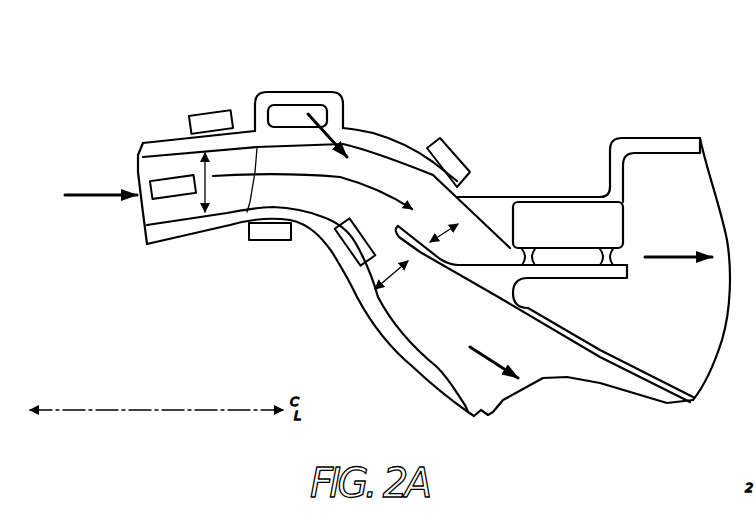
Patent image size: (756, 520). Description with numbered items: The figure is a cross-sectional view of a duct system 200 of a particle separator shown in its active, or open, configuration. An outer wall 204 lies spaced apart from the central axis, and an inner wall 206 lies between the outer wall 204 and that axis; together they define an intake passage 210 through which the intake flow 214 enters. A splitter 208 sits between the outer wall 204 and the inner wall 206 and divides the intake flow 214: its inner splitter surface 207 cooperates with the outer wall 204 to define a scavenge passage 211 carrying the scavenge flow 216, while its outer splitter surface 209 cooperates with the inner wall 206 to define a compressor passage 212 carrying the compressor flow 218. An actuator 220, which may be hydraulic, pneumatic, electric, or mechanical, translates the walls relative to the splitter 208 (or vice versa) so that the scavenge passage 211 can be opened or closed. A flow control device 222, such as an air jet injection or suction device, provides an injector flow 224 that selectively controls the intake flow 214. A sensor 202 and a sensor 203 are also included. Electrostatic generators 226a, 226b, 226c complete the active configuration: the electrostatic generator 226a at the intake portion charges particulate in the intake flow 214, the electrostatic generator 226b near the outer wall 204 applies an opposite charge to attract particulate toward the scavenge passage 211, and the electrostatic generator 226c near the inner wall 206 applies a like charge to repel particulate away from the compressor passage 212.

The duct system 200 is at (550, 98).
The sensor 202 is at (428, 147).
The sensor 203 is at (368, 282).
The outer wall 204 is at (236, 175).
The inner wall 206 is at (233, 165).
The inner splitter surface 207 is at (448, 225).
The splitter 208 is at (433, 265).
The outer splitter surface 209 is at (393, 237).
The intake passage 210 is at (207, 168).
The scavenge passage 211 is at (480, 240).
The compressor passage 212 is at (390, 313).
The intake flow 214 is at (90, 198).
The scavenge flow 216 is at (670, 262).
The compressor flow 218 is at (492, 368).
The actuator 220 is at (625, 227).
The flow control device 222 is at (295, 102).
The injector flow 224 is at (343, 126).
The electrostatic generator 226a is at (172, 207).
The electrostatic generator 226b is at (208, 110).
The electrostatic generator 226c is at (270, 242).